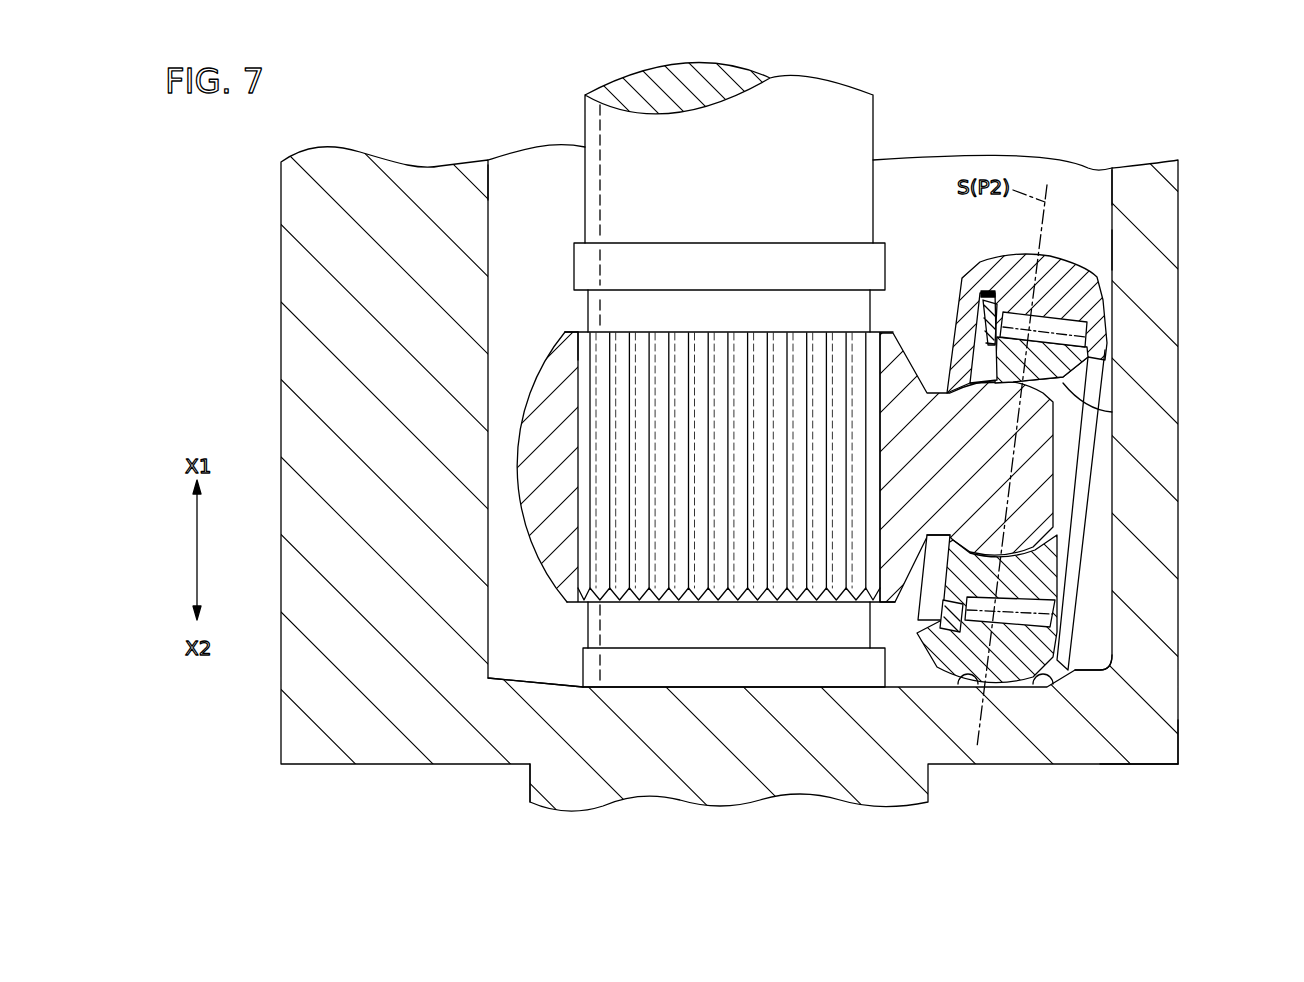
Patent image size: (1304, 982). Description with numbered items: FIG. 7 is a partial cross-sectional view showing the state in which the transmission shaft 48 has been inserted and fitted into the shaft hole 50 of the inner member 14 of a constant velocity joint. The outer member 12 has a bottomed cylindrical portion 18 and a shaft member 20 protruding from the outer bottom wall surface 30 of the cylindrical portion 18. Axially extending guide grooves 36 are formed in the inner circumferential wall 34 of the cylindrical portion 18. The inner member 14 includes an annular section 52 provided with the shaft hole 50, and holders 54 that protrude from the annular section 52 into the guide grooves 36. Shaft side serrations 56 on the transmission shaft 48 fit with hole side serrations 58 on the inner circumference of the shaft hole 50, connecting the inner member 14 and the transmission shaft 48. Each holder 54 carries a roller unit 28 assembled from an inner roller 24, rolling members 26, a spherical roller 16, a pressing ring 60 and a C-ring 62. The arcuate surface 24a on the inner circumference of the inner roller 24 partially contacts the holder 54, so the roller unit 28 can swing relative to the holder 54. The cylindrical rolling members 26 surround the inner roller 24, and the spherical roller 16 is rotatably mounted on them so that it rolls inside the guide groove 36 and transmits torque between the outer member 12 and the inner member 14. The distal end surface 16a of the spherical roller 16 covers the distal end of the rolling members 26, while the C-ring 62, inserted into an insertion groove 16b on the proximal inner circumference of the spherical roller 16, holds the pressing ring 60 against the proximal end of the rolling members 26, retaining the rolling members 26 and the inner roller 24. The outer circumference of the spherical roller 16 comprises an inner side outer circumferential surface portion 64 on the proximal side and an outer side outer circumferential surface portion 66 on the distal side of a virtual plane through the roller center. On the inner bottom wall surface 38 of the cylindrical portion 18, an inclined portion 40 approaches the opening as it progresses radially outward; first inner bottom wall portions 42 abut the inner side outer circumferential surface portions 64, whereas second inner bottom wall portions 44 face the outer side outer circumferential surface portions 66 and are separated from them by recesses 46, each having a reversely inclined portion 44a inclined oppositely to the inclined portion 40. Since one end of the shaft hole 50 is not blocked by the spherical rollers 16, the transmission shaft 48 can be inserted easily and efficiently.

The outer member 12 is at (1190, 168).
The inner member 14 is at (696, 455).
The spherical roller 16 is at (1078, 380).
The distal end surface 16a is at (1108, 347).
The insertion groove 16b is at (983, 302).
The cylindrical portion 18 is at (1178, 740).
The shaft member 20 is at (530, 778).
The inner roller 24 is at (1070, 372).
The arcuate surface 24a is at (1112, 412).
The rolling member 26 is at (1068, 300).
The roller unit 28 is at (1090, 257).
The outer bottom wall surface 30 is at (1140, 763).
The inner circumferential wall 34 is at (490, 185).
The guide groove 36 is at (1107, 188).
The inner bottom wall surface 38 is at (648, 685).
The inclined portion 40 is at (525, 678).
The first inner bottom wall portion 42 is at (960, 677).
The second inner bottom wall portion 44 is at (951, 605).
The reversely inclined portion 44a is at (917, 632).
The recess 46 is at (1053, 673).
The transmission shaft 48 is at (858, 125).
The shaft hole 50 is at (580, 349).
The annular section 52 is at (540, 547).
The holder 54 is at (1030, 514).
The shaft side serrations 56 is at (652, 355).
The hole side serrations 58 is at (580, 390).
The pressing ring 60 is at (990, 332).
The C-ring 62 is at (975, 313).
The inner side outer circumferential surface portion 64 is at (942, 672).
The outer side outer circumferential surface portion 66 is at (1023, 680).